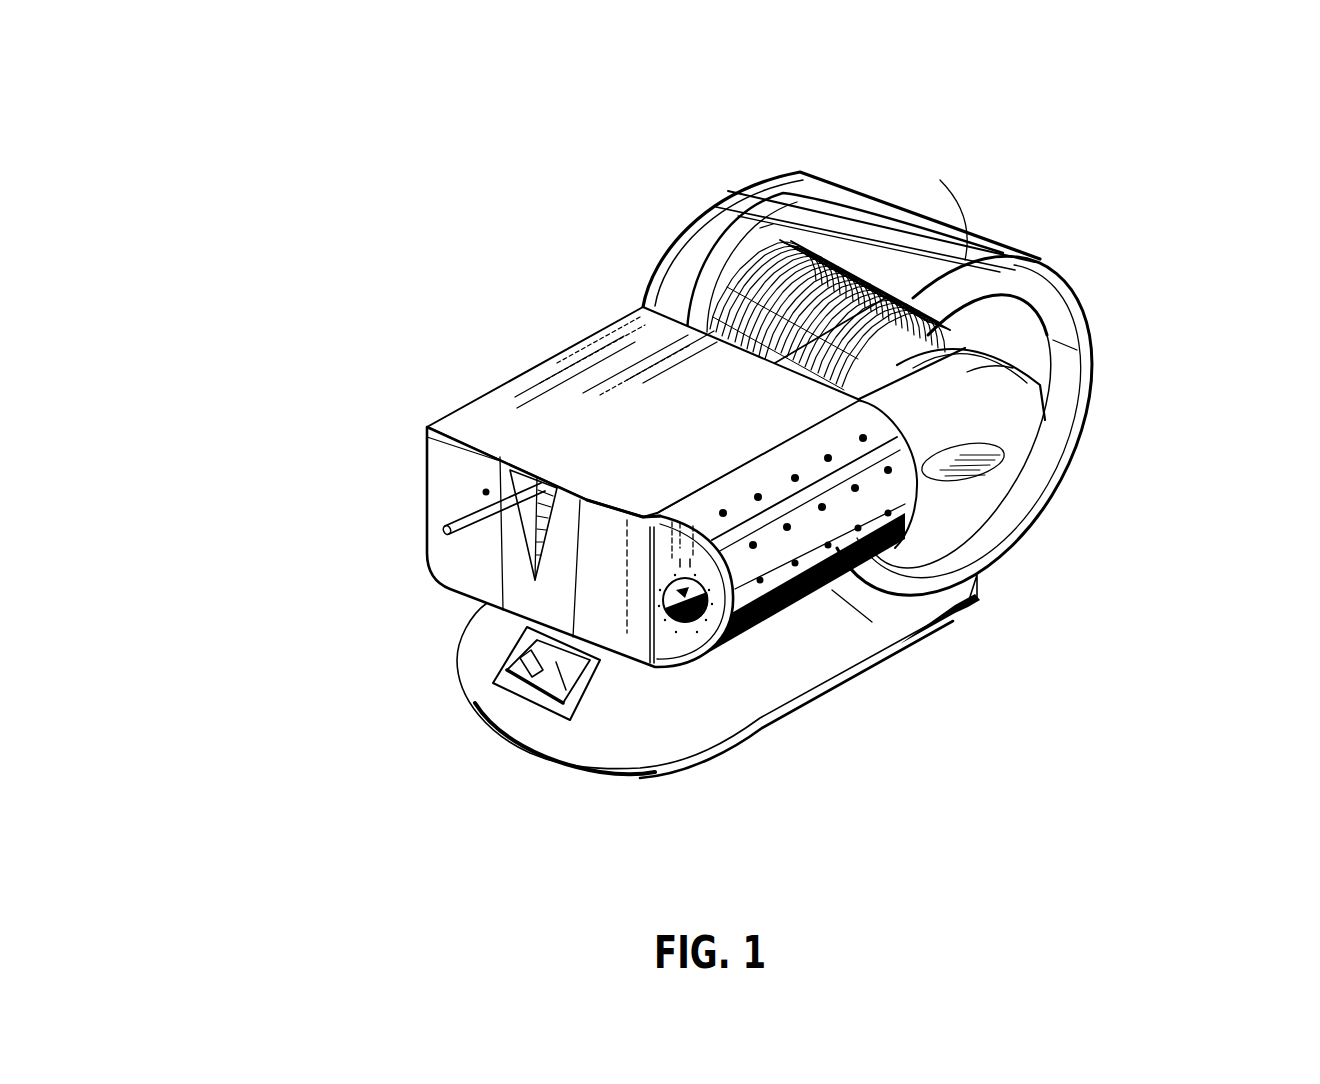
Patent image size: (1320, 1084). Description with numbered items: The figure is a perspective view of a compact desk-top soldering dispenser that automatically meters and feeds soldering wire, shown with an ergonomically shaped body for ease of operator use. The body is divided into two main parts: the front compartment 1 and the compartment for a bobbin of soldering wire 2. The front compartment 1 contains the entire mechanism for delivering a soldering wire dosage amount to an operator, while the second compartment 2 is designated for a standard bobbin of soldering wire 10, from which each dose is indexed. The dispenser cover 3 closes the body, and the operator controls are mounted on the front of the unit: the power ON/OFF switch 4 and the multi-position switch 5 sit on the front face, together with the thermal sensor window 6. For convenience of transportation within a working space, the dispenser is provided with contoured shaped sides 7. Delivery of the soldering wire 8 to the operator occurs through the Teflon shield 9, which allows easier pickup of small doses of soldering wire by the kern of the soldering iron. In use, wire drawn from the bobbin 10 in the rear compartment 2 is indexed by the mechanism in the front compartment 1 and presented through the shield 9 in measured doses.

The front compartment 1 is at (588, 262).
The compartment for a bobbin of soldering wire 2 is at (744, 124).
The dispenser cover 3 is at (951, 576).
The power ON/OFF switch 4 is at (495, 692).
The multi-position switch 5 is at (658, 666).
The thermal sensor window 6 is at (467, 475).
The contoured shaped sides 7 is at (775, 533).
The soldering wire 8 is at (457, 513).
The Teflon shield 9 is at (517, 548).
The bobbin of soldering wire 10 is at (1010, 323).